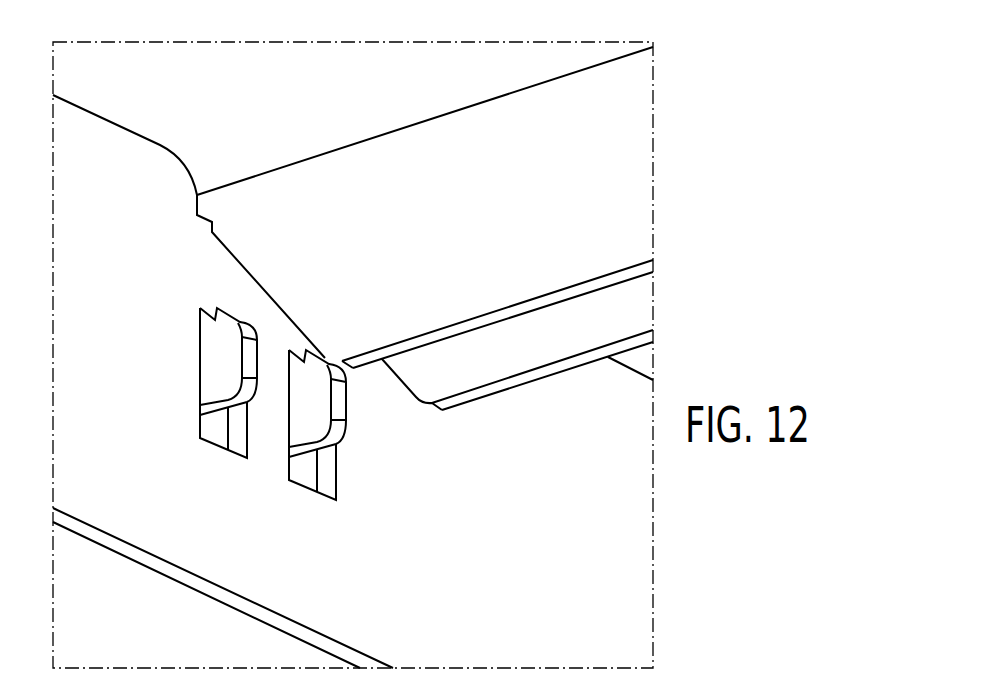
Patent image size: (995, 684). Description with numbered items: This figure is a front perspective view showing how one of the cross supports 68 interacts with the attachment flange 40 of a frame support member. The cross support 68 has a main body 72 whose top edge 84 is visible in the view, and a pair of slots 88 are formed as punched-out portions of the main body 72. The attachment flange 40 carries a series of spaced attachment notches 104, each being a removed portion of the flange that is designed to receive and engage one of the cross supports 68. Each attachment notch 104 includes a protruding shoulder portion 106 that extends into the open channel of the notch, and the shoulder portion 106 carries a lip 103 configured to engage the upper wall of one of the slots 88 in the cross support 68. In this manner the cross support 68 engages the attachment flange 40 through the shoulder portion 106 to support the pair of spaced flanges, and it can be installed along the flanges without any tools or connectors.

The cross support 68 is at (96, 254).
The top edge 84 is at (113, 136).
The lip 103 is at (407, 169).
The attachment notch 104 is at (238, 258).
The attachment flange 40 is at (572, 216).
The protruding shoulder portion 106 is at (212, 366).
The slot 88 is at (212, 432).
The main body 72 is at (223, 588).